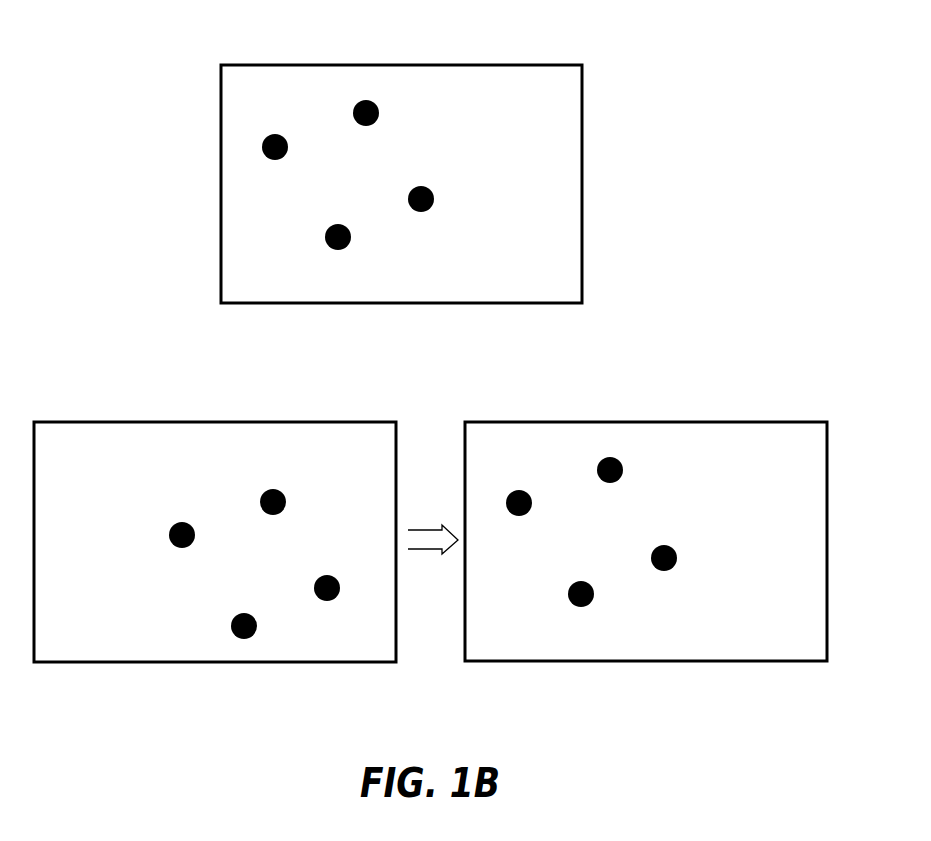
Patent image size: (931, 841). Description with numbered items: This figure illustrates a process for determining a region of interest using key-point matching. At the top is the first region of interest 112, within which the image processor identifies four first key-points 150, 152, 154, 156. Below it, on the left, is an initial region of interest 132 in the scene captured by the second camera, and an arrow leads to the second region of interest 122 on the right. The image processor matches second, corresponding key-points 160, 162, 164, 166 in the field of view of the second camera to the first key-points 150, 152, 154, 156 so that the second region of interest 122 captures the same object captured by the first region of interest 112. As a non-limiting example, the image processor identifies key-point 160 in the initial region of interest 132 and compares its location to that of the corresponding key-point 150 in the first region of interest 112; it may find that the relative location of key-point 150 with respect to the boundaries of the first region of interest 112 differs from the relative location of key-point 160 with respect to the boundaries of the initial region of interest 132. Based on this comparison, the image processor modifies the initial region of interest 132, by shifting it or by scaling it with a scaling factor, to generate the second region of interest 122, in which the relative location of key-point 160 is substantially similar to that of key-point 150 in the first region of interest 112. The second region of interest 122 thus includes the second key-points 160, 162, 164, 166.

The first region of interest 112 is at (400, 63).
The key-point 150 is at (281, 135).
The key-point 152 is at (373, 102).
The key-point 154 is at (345, 226).
The key-point 156 is at (428, 188).
The initial region of interest 132 is at (204, 420).
The second region of interest 122 is at (644, 420).
The key-point 160 is at (188, 523).
The key-point 162 is at (280, 491).
The key-point 164 is at (251, 615).
The key-point 166 is at (334, 577).